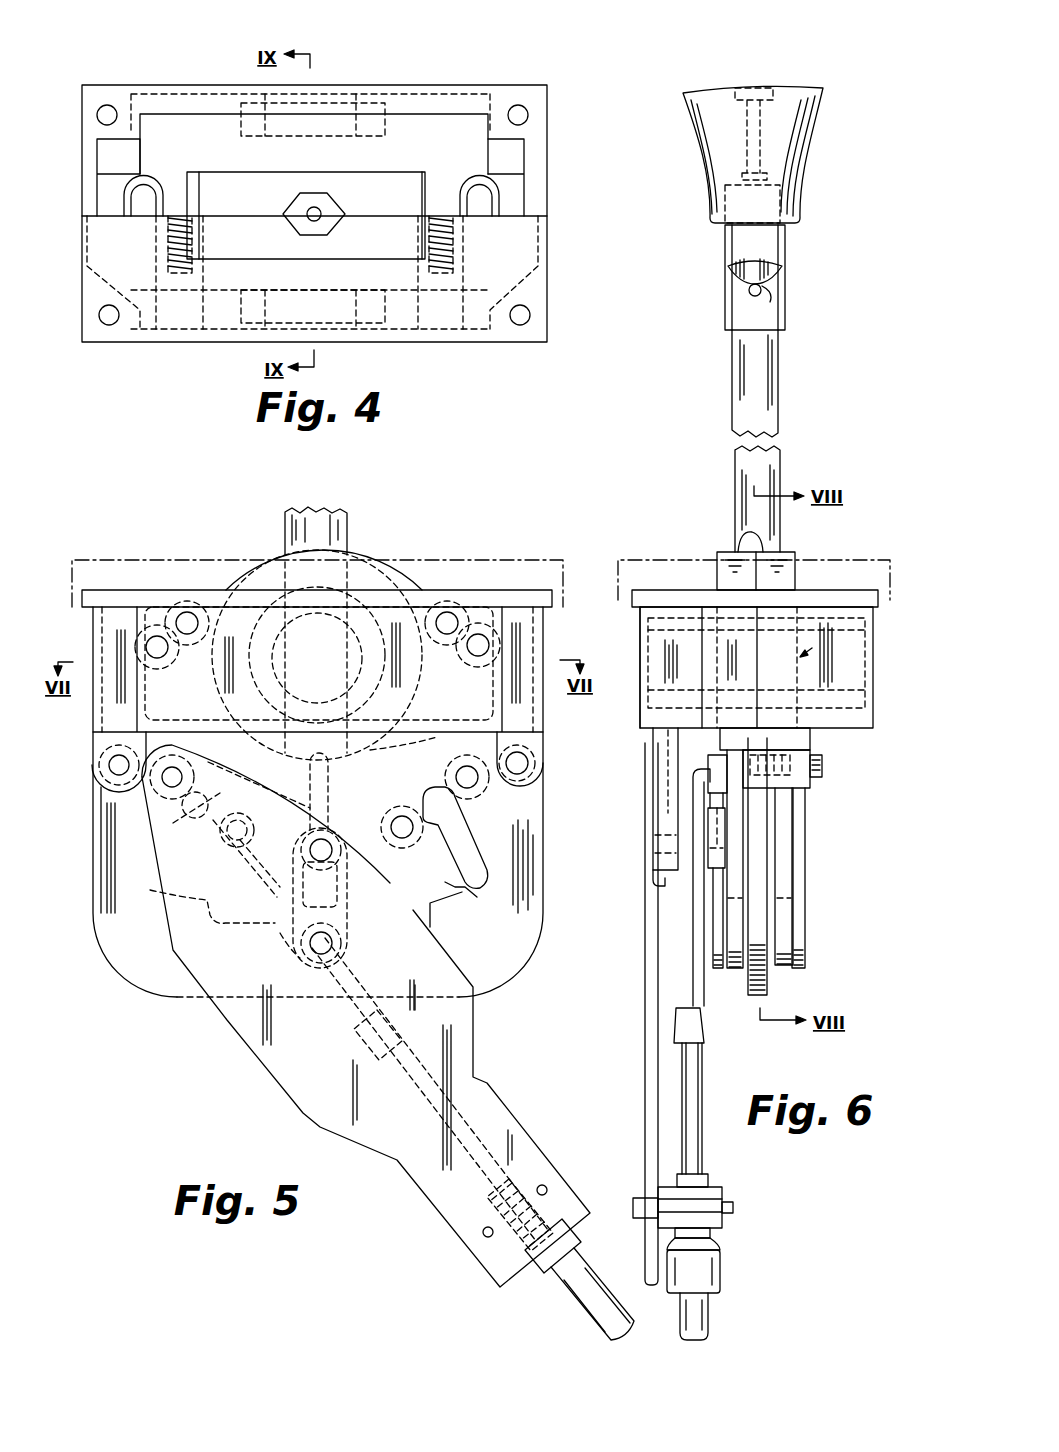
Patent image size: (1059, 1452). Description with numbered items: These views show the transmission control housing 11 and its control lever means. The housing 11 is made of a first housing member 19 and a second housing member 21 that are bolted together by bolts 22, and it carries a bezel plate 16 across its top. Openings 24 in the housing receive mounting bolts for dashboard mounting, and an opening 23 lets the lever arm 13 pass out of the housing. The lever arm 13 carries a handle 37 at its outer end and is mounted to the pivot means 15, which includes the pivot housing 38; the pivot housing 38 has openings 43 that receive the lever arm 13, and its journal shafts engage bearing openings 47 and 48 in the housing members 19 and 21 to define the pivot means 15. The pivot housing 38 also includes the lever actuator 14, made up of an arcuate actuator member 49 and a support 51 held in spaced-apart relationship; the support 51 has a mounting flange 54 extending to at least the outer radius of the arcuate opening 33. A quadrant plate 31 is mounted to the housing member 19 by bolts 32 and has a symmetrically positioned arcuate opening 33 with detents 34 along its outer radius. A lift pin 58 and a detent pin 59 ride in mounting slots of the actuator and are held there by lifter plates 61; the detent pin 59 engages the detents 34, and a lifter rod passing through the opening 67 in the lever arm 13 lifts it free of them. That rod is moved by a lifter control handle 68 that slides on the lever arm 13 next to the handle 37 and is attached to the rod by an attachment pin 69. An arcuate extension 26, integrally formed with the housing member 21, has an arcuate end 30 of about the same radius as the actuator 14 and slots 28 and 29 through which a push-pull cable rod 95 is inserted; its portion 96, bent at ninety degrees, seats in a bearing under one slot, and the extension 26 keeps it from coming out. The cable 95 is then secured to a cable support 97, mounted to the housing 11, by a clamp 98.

In FIG. 4, the housing 11 is at (548, 194).
In FIG. 5, the housing 11 is at (93, 640).
In FIG. 4, the lever arm 13 is at (333, 207).
In FIG. 5, the lever arm 13 is at (349, 526).
In FIG. 6, the lever arm 13 is at (779, 388).
In FIG. 6, the lever actuator 14 is at (788, 852).
In FIG. 6, the pivot means 15 is at (867, 641).
In FIG. 5, the bezel plate 16 is at (488, 559).
In FIG. 4, the first housing member 19 is at (548, 138).
In FIG. 6, the first housing member 19 is at (875, 716).
In FIG. 4, the second housing member 21 is at (548, 258).
In FIG. 5, the second housing member 21 is at (520, 660).
In FIG. 6, the second housing member 21 is at (641, 658).
In FIG. 4, the bolts 22 is at (177, 212).
In FIG. 4, the opening 23 is at (428, 178).
In FIG. 4, the openings 24 is at (107, 106).
In FIG. 5, the arcuate extension 26 is at (481, 798).
In FIG. 6, the arcuate extension 26 is at (655, 799).
In FIG. 5, the slot 28 is at (462, 832).
In FIG. 5, the slot 29 is at (222, 830).
In FIG. 5, the arcuate end 30 is at (416, 841).
In FIG. 6, the arcuate end 30 is at (652, 879).
In FIG. 5, the quadrant plate 31 is at (460, 953).
In FIG. 6, the quadrant plate 31 is at (768, 984).
In FIG. 5, the bolts 32 is at (108, 768).
In FIG. 6, the bolts 32 is at (823, 775).
In FIG. 5, the arcuate opening 33 is at (470, 897).
In FIG. 5, the detents 34 is at (208, 912).
In FIG. 6, the handle 37 is at (703, 93).
In FIG. 4, the pivot housing 38 is at (360, 246).
In FIG. 5, the pivot housing 38 is at (262, 578).
In FIG. 6, the pivot housing 38 is at (797, 557).
In FIG. 6, the openings 43 is at (738, 545).
In FIG. 4, the bearing opening 47 is at (343, 100).
In FIG. 4, the bearing opening 48 is at (345, 328).
In FIG. 6, the actuator member 49 is at (762, 889).
In FIG. 6, the support 51 is at (793, 888).
In FIG. 5, the mounting flange 54 is at (350, 890).
In FIG. 5, the lift pin 58 is at (330, 786).
In FIG. 5, the detent pin 59 is at (334, 951).
In FIG. 5, the lifter plates 61 is at (277, 938).
In FIG. 6, the lifter plates 61 is at (733, 966).
In FIG. 4, the opening 67 is at (307, 219).
In FIG. 6, the lifter control handle 68 is at (783, 269).
In FIG. 6, the attachment pin 69 is at (771, 298).
In FIG. 5, the push-pull cable rod 95 is at (575, 1298).
In FIG. 6, the push-pull cable rod 95 is at (703, 1161).
In FIG. 6, the bent portion 96 is at (705, 767).
In FIG. 5, the cable support 97 is at (430, 1201).
In FIG. 6, the cable support 97 is at (645, 951).
In FIG. 5, the clamp 98 is at (546, 1185).
In FIG. 6, the clamp 98 is at (735, 1209).